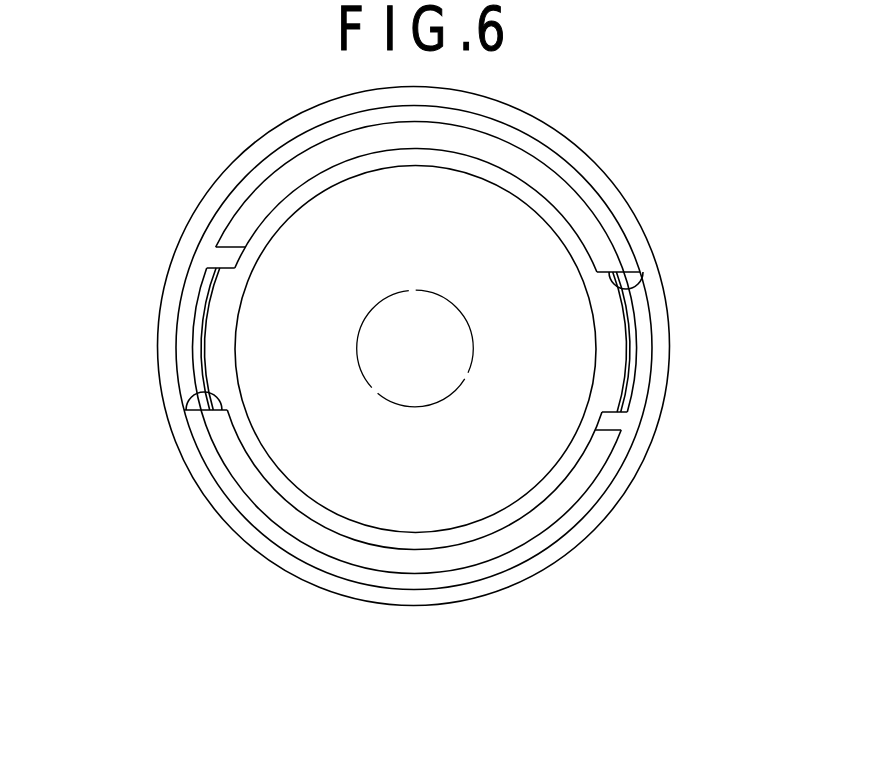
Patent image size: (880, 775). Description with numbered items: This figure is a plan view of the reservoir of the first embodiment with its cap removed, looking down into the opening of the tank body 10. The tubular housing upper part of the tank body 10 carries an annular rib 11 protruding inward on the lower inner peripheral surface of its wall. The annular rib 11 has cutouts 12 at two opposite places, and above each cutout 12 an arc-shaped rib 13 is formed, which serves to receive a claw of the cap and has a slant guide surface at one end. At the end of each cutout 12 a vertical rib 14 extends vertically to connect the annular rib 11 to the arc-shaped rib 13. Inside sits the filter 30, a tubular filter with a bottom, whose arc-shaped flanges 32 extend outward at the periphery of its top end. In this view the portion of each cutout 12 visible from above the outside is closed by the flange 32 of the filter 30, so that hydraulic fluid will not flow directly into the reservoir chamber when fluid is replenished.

The tank body 10 is at (597, 147).
The annular rib 11 is at (526, 536).
The cutout 12 is at (205, 393).
The arc-shaped rib 13 is at (185, 328).
The vertical rib 14 is at (232, 262).
The filter 30 is at (414, 525).
The arc-shaped flange 32 is at (205, 358).